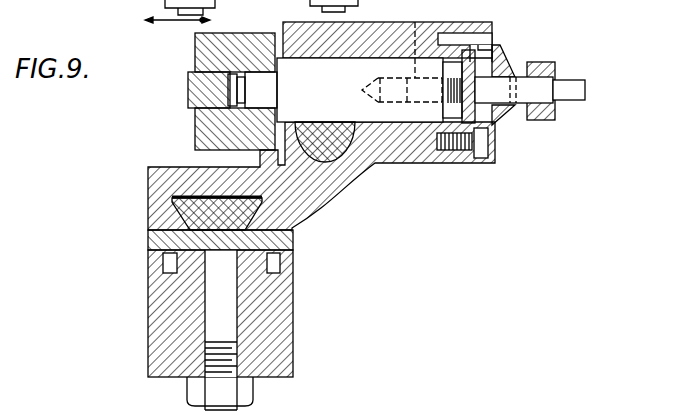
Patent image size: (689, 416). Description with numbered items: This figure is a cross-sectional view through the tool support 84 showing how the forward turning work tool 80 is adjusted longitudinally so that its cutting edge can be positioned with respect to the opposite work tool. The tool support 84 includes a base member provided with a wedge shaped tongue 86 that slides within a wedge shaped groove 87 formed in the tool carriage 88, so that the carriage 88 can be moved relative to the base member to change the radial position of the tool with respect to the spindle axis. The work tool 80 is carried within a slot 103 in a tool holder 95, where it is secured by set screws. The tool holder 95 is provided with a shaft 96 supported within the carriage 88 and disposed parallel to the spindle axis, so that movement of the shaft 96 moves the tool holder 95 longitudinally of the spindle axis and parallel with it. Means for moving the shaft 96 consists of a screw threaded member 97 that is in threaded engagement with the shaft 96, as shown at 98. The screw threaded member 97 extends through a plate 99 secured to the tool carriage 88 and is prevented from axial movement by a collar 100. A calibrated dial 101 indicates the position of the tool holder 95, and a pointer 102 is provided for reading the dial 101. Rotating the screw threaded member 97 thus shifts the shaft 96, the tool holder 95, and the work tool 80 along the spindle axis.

The work tool 80 is at (195, 95).
The tool support 84 is at (195, 117).
The wedge shaped tongue 86 is at (195, 222).
The wedge shaped groove 87 is at (165, 238).
The tool carriage 88 is at (148, 185).
The tool holder 95 is at (198, 46).
The shaft 96 is at (348, 72).
The screw threaded member 97 is at (505, 83).
The threaded engagement 98 is at (415, 22).
The plate 99 is at (484, 28).
The collar 100 is at (486, 120).
The calibrated dial 101 is at (492, 118).
The pointer 102 is at (494, 40).
The slot 103 is at (190, 75).